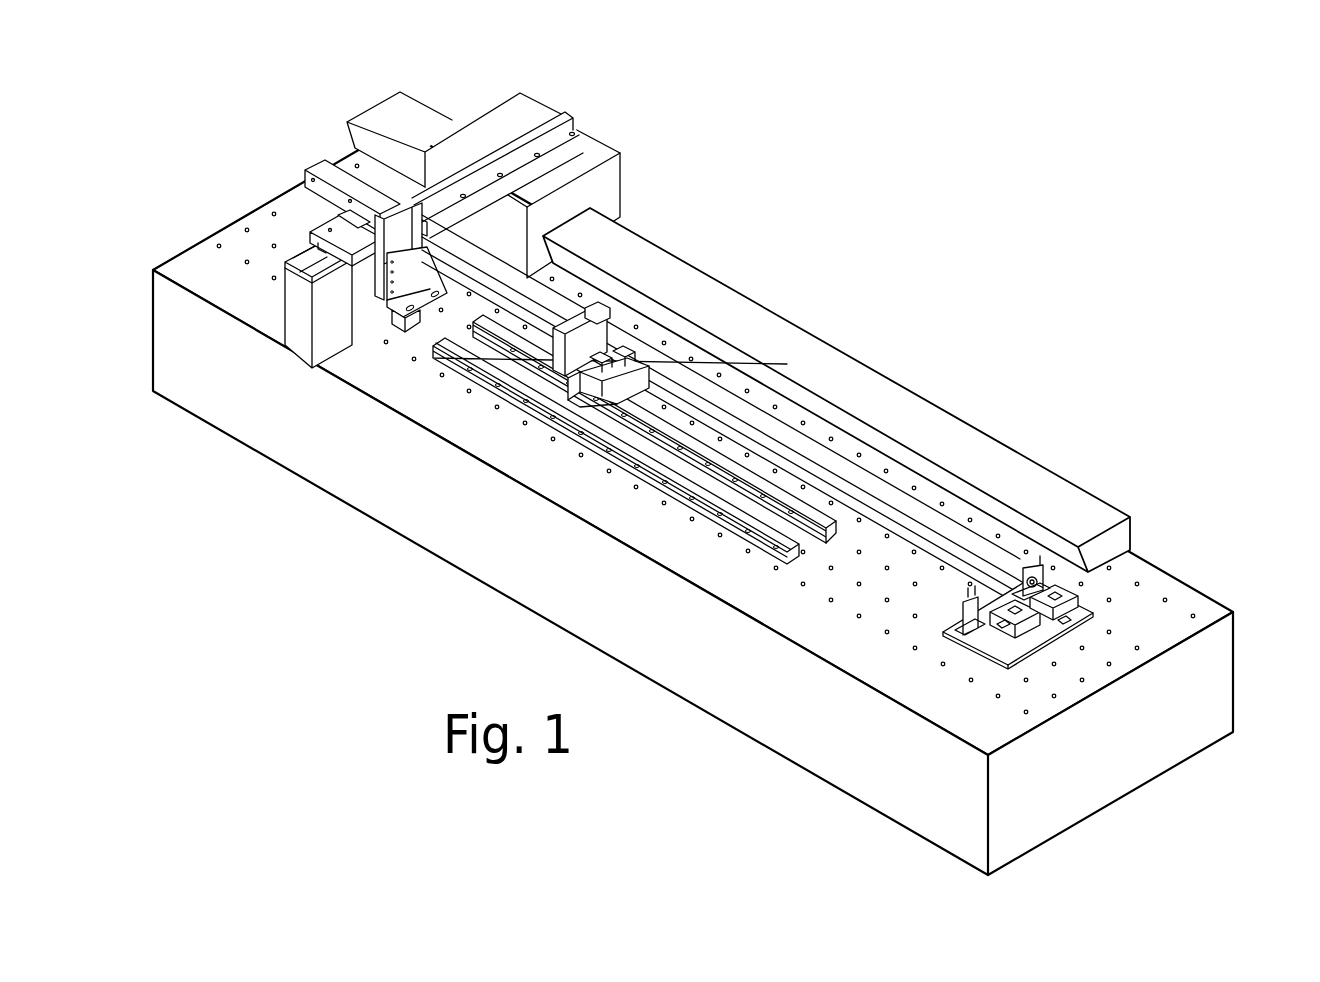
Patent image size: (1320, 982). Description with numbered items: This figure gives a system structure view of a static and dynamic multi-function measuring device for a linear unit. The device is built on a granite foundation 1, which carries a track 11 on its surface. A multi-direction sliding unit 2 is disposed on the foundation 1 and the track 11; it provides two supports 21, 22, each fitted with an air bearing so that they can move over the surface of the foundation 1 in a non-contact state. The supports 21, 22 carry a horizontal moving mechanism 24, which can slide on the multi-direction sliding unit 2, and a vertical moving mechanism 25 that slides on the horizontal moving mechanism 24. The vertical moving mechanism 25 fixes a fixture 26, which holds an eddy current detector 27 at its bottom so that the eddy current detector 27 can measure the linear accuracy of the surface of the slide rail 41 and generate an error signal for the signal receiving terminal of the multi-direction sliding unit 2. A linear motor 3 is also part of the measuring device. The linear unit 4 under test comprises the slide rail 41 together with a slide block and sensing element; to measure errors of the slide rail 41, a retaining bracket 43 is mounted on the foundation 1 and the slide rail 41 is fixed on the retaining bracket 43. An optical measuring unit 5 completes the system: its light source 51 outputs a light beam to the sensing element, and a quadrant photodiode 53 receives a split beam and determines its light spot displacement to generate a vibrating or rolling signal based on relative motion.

The foundation 1 is at (1165, 583).
The track 11 is at (1012, 458).
The multi-direction sliding unit 2 is at (588, 118).
The support 21 is at (610, 187).
The linear motor 3 is at (320, 167).
The support 22 is at (301, 340).
The horizontal moving mechanism 24 is at (360, 206).
The vertical moving mechanism 25 is at (376, 300).
The fixture 26 is at (425, 302).
The eddy current detector 27 is at (392, 318).
The linear unit 4 is at (654, 346).
The slide rail 41 is at (782, 488).
The retaining bracket 43 is at (833, 526).
The optical measuring unit 5 is at (1072, 657).
The light source 51 is at (1068, 597).
The quadrant photodiode 53 is at (1038, 580).